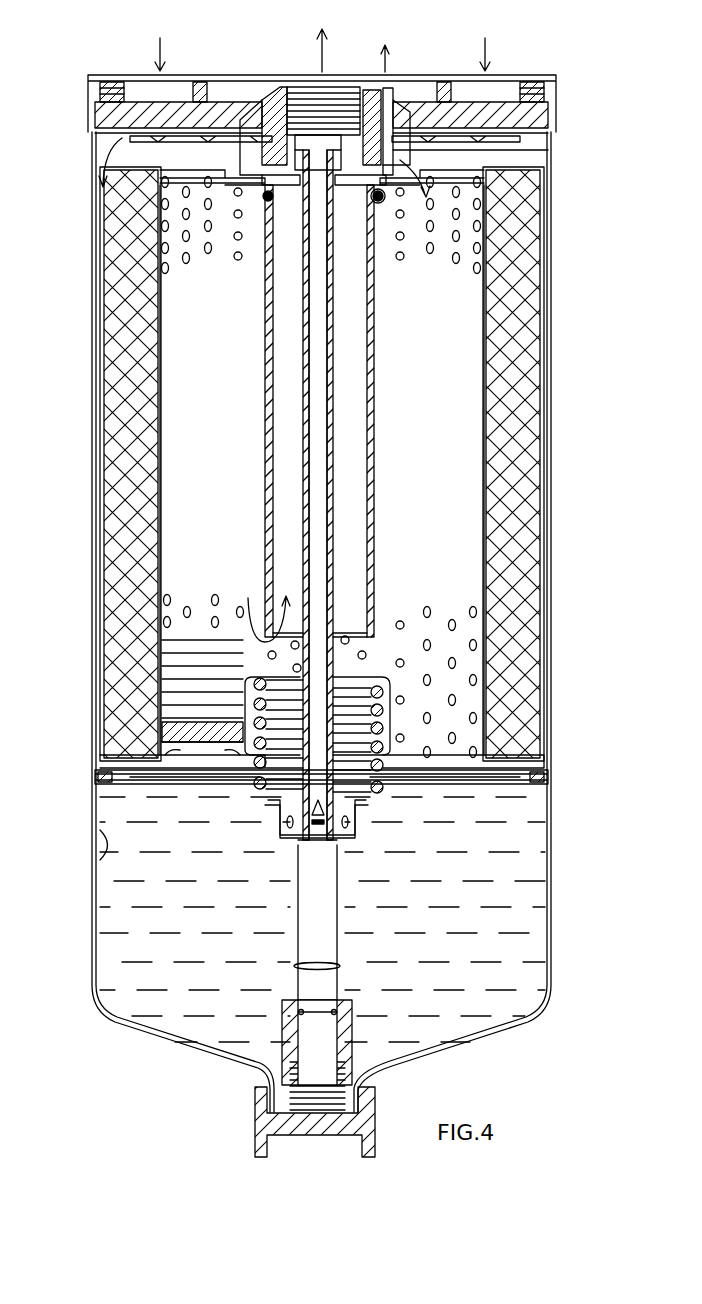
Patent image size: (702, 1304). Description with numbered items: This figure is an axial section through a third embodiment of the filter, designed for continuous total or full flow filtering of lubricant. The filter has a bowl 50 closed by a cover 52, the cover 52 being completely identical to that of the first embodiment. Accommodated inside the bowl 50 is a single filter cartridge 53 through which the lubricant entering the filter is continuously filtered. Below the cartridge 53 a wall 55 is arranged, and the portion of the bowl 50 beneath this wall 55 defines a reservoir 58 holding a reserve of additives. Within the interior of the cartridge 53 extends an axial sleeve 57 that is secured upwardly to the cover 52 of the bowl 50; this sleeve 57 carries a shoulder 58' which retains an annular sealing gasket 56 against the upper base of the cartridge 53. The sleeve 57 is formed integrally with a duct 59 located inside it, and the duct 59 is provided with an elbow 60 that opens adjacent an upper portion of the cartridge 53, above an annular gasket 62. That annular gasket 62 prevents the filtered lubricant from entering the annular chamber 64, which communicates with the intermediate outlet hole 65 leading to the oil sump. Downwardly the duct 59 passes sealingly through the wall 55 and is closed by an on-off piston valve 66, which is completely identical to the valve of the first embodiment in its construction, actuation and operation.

The bowl 50 is at (563, 438).
The cover 52 is at (112, 120).
The filter cartridge 53 is at (118, 398).
The wall 55 is at (483, 782).
The annular sealing gasket 56 is at (262, 170).
The axial sleeve 57 is at (373, 450).
The reservoir 58 is at (78, 887).
The shoulder 58' is at (493, 166).
The duct 59 is at (330, 378).
The elbow 60 is at (318, 160).
The annular gasket 62 is at (387, 200).
The annular chamber 64 is at (305, 160).
The intermediate outlet hole 65 is at (390, 105).
The on-off piston valve 66 is at (315, 825).